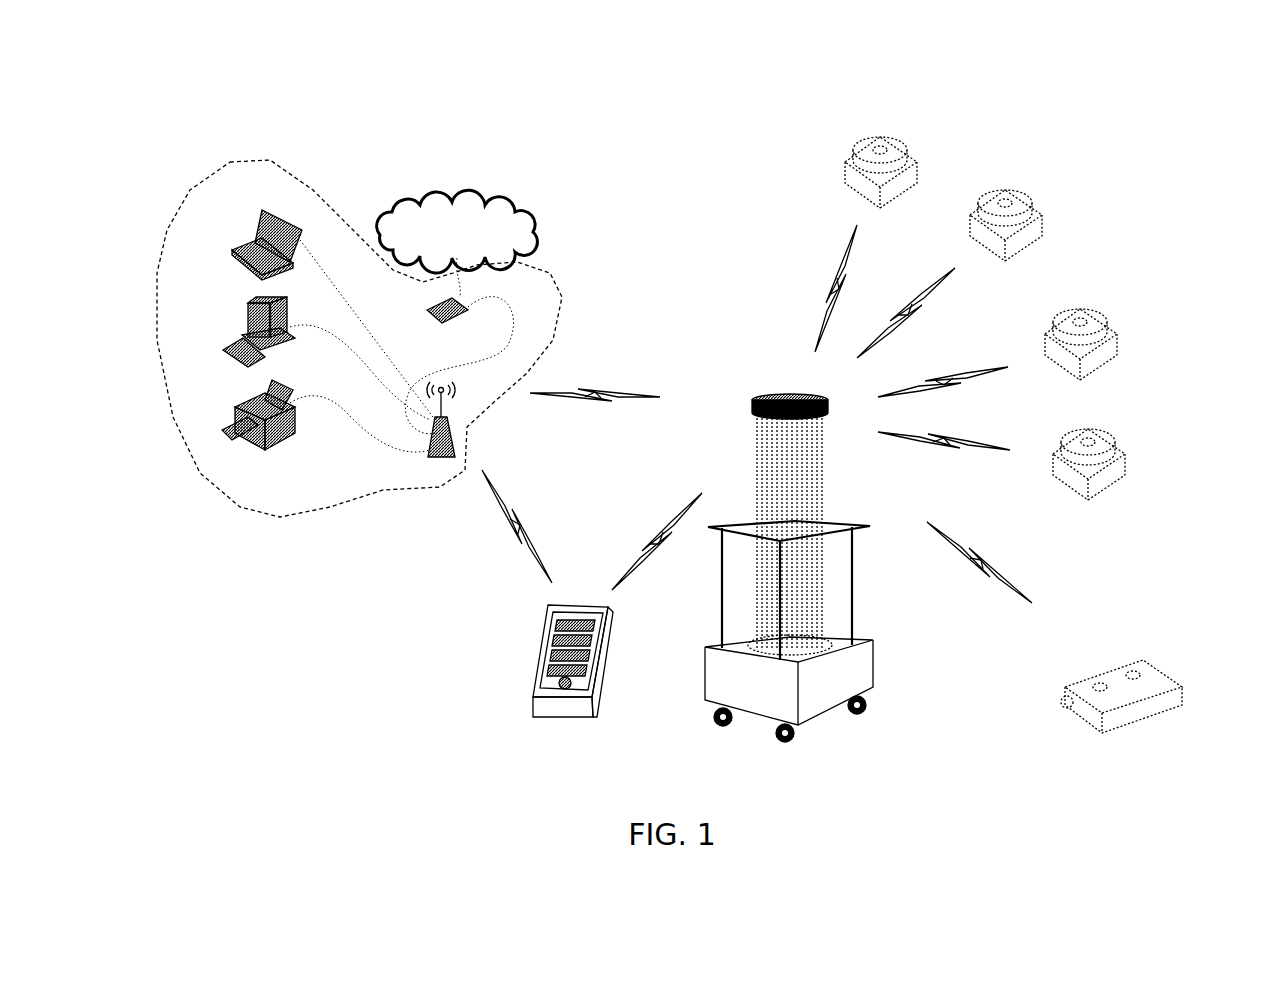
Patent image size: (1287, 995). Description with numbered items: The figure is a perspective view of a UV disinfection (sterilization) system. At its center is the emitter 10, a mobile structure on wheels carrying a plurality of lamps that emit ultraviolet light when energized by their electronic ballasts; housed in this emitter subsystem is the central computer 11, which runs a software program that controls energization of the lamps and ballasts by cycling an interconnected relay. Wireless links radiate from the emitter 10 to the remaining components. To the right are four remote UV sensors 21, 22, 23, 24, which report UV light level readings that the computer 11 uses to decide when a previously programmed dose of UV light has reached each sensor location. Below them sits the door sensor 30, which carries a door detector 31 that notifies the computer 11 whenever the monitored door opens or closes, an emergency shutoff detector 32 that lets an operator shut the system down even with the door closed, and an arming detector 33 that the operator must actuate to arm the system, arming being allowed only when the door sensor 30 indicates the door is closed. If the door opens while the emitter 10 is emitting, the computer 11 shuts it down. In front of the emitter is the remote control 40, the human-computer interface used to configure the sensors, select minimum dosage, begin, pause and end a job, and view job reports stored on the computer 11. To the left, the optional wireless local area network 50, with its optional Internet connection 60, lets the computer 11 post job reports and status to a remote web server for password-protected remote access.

The emitter 10 is at (796, 592).
The central computer 11 is at (827, 703).
The UV sensor 21 is at (1123, 458).
The UV sensor 22 is at (1117, 343).
The UV sensor 23 is at (1035, 213).
The UV sensor 24 is at (902, 130).
The door sensor 30 is at (1113, 700).
The door detector 31 is at (1063, 707).
The emergency shutoff detector 32 is at (1098, 682).
The arming detector 33 is at (1135, 668).
The remote control 40 is at (523, 680).
The wireless local area network 50 is at (240, 507).
The Internet connection 60 is at (452, 200).